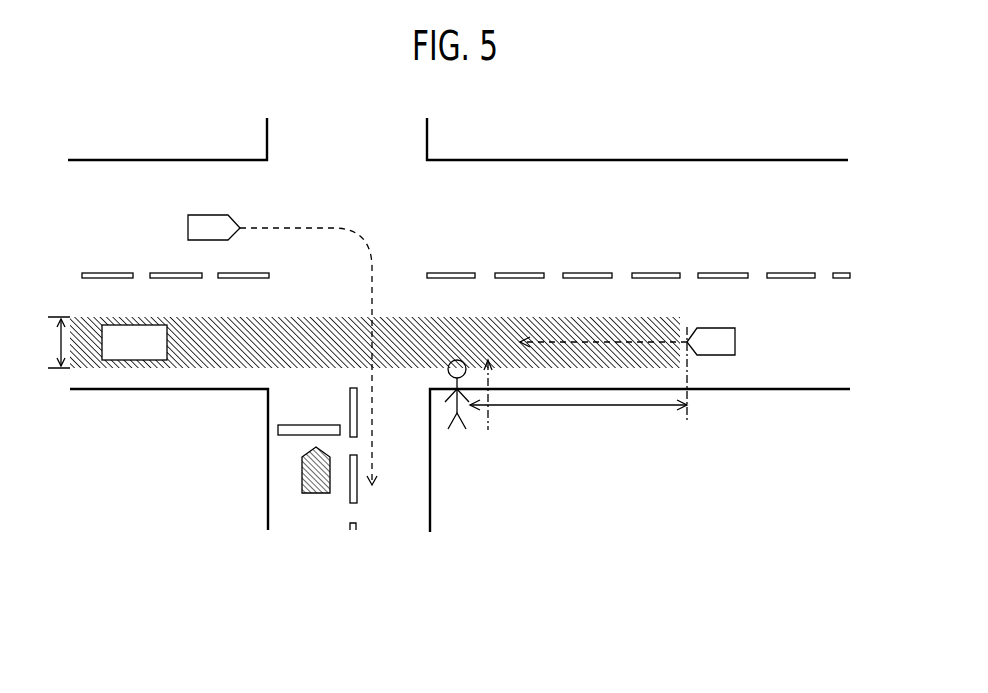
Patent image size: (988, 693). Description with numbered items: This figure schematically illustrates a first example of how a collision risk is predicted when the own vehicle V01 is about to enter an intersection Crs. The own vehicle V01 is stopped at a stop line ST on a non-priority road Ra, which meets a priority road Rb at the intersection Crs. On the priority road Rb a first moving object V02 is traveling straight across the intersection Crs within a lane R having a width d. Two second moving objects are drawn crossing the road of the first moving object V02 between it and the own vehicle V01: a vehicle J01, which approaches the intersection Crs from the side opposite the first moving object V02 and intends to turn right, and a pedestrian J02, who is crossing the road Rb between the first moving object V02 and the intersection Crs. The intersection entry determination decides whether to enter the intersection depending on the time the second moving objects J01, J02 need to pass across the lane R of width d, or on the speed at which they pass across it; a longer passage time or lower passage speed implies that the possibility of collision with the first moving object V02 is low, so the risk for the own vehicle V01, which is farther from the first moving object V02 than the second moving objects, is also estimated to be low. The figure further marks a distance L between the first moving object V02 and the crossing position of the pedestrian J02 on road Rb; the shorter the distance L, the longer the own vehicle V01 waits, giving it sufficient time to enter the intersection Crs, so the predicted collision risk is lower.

The intersection Crs is at (375, 177).
The non-priority road Ra is at (390, 517).
The priority road Rb is at (763, 237).
The lane R is at (375, 342).
The width d is at (56, 342).
The vehicle J01 is at (188, 228).
The pedestrian J02 is at (459, 431).
The own vehicle V01 is at (316, 494).
The first moving object V02 is at (716, 356).
The stop line ST is at (278, 430).
The distance L is at (578, 416).